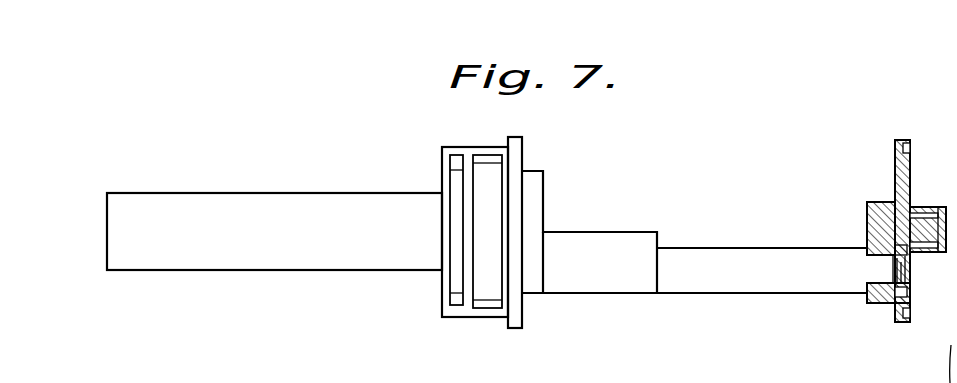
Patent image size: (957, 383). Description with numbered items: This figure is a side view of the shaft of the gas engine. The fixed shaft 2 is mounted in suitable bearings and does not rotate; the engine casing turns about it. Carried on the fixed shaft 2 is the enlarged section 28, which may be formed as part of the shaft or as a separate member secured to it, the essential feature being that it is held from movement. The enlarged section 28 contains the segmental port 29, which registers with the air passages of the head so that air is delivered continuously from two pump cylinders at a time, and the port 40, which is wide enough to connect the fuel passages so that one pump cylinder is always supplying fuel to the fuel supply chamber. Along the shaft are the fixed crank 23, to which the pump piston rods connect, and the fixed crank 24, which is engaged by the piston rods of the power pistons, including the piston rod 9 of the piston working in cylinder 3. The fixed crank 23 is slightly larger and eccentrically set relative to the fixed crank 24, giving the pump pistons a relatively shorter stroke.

The fixed shaft 2 is at (237, 195).
The enlarged section 28 is at (442, 161).
The segmental port 29 is at (457, 160).
The port 40 is at (486, 285).
The fixed crank 23 is at (607, 241).
The fixed crank 24 is at (780, 259).
The piston rod 9 is at (718, 247).
The cylinder 3 is at (912, 237).